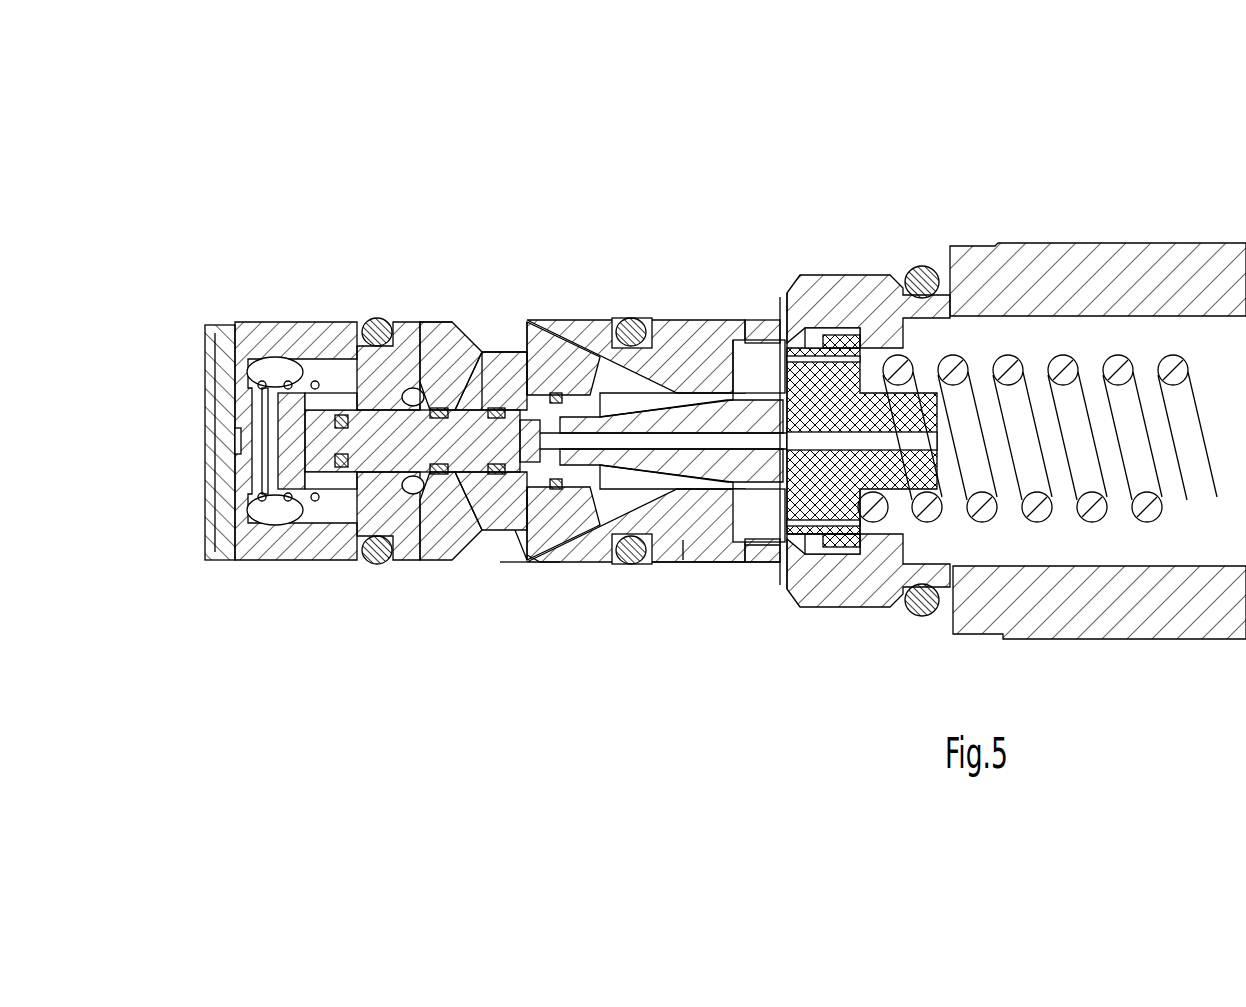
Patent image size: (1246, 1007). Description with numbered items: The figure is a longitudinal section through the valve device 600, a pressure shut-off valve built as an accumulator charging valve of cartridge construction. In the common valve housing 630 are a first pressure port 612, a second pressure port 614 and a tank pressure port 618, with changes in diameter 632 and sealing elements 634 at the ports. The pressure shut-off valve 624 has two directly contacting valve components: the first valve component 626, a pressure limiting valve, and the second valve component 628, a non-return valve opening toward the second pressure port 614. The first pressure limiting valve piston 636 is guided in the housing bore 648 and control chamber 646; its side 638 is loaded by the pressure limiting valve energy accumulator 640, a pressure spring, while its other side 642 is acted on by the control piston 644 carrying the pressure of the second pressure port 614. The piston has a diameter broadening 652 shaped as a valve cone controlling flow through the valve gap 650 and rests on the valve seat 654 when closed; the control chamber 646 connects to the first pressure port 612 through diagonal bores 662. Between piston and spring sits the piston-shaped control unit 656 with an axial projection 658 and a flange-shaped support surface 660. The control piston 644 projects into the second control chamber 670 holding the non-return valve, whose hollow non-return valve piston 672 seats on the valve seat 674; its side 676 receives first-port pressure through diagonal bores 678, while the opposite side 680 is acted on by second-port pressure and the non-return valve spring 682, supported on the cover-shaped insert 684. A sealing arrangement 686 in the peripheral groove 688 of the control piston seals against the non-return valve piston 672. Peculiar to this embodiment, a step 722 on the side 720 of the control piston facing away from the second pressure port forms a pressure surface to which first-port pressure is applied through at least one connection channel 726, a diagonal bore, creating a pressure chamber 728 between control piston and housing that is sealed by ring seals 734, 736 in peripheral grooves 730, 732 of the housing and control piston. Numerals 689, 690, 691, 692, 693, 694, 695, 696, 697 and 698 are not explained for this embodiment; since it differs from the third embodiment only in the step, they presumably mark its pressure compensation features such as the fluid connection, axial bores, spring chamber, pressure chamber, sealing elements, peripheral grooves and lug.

The valve device 600 is at (1073, 200).
The first pressure port 612 is at (480, 345).
The second pressure port 614 is at (272, 372).
The tank pressure port 618 is at (762, 320).
The pressure shut-off valve 624 is at (662, 560).
The first valve component 626 is at (770, 560).
The second valve component 628 is at (318, 560).
The valve housing 630 is at (693, 560).
The changes in diameter 632 is at (790, 300).
The sealing elements 634 is at (385, 340).
The first pressure limiting valve piston 636 is at (723, 560).
The side 638 is at (823, 560).
The pressure limiting valve energy accumulator 640 is at (1155, 567).
The other side 642 is at (537, 560).
The control piston 644 is at (403, 565).
The control chamber 646 is at (698, 392).
The housing bore 648 is at (576, 312).
The valve gap 650 is at (753, 560).
The diameter broadening 652 is at (760, 392).
The valve seat 654 is at (735, 393).
The piston-shaped control unit 656 is at (977, 390).
The axial projection 658 is at (900, 560).
The flange-shaped support surface 660 is at (868, 380).
The diagonal bores 662 is at (590, 378).
The second control chamber 670 is at (380, 500).
The non-return valve piston 672 is at (297, 383).
The valve seat 674 is at (352, 358).
The side 676 is at (410, 400).
The diagonal bores 678 is at (470, 330).
The opposite side 680 is at (237, 357).
The non-return valve spring 682 is at (240, 560).
The cover-shaped insert 684 is at (217, 465).
The sealing arrangement 686 is at (262, 485).
The peripheral groove 688 is at (317, 443).
The gap 689 is at (870, 560).
The annular gap 690 is at (587, 560).
The chamber 691 is at (683, 560).
The seal ring 692 is at (577, 560).
The spring end coil 693 is at (955, 610).
The compression spring 694 is at (1070, 567).
The passage 695 is at (525, 400).
The seal 696 is at (557, 560).
The passage 697 is at (535, 312).
The seal 698 is at (530, 560).
The side 720 is at (600, 413).
The step 722 is at (445, 340).
The connection channel 726 is at (473, 560).
The pressure chamber 728 is at (476, 318).
The peripheral groove 730 is at (427, 320).
The peripheral groove 732 is at (505, 563).
The ring seal 734 is at (438, 560).
The ring seal 736 is at (510, 350).